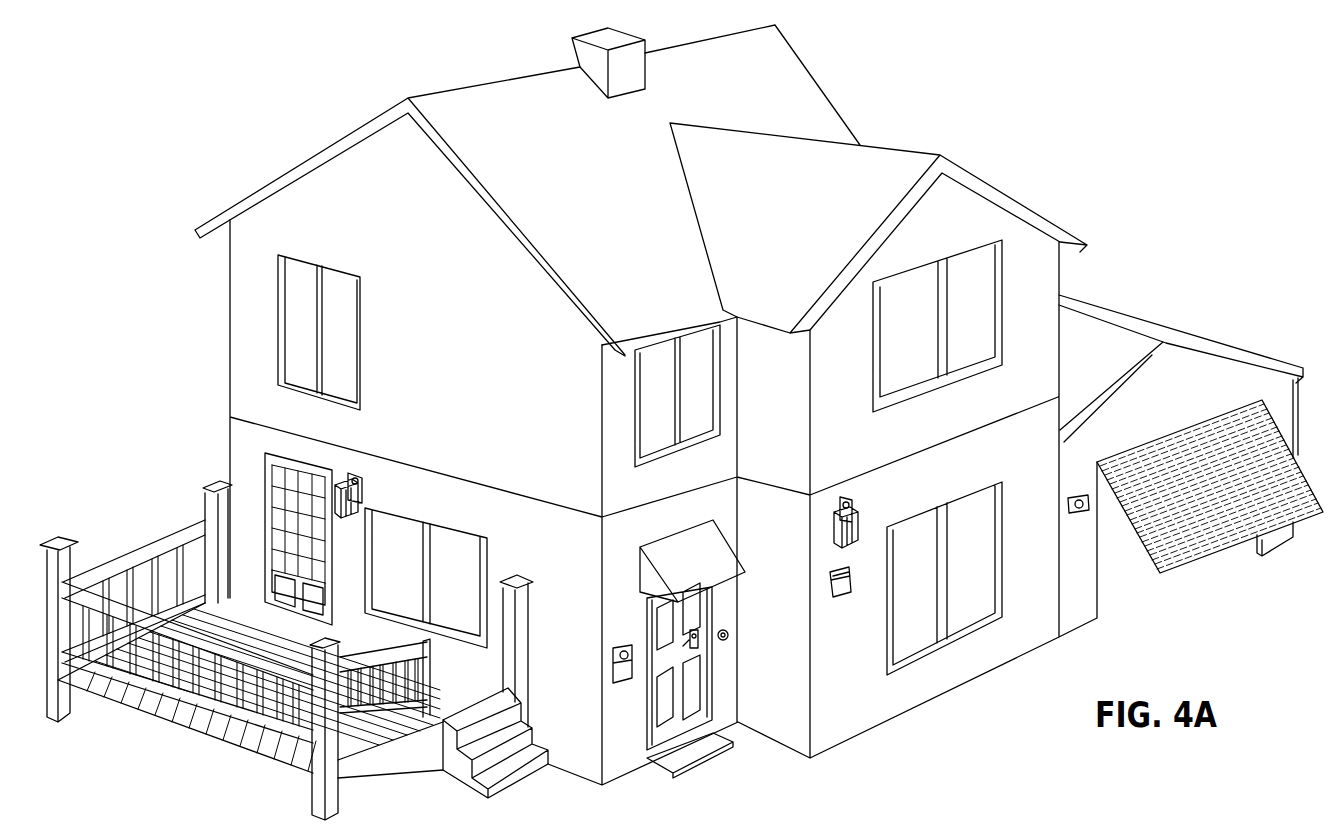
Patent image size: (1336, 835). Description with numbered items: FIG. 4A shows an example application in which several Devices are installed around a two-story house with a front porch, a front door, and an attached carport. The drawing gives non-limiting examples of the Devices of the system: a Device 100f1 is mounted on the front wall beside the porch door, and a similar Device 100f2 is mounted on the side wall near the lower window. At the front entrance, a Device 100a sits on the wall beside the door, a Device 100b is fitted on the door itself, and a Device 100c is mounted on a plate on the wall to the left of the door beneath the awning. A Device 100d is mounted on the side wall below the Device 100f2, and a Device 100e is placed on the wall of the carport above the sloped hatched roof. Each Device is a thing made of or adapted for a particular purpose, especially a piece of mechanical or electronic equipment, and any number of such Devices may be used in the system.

The Device 100f1 is at (365, 492).
The Device 100f2 is at (865, 508).
The Device 100a is at (723, 630).
The Device 100b is at (702, 645).
The Device 100c is at (621, 648).
The Device 100d is at (850, 597).
The Device 100e is at (1075, 497).